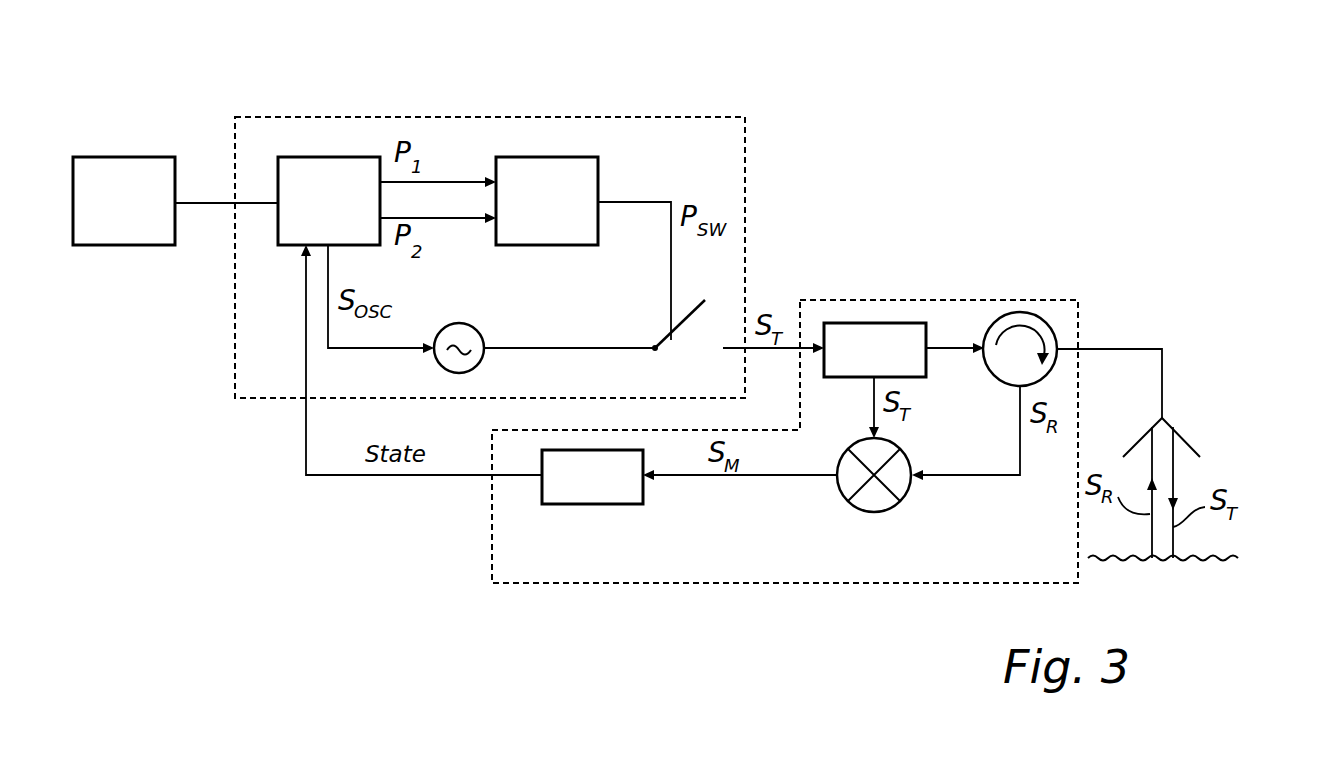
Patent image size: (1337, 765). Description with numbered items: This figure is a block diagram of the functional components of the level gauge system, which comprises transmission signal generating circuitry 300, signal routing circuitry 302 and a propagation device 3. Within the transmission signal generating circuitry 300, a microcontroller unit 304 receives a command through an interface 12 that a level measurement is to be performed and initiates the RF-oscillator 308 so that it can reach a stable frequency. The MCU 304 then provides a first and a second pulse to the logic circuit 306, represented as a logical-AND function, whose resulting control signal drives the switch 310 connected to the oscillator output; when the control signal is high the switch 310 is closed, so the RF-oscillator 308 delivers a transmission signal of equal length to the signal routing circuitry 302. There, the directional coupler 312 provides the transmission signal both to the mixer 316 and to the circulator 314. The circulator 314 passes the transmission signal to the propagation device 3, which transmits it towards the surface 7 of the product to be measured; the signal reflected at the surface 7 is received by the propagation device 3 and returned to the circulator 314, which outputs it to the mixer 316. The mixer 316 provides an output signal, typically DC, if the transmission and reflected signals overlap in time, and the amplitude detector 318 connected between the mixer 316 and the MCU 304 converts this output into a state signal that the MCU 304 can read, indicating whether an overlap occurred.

The interface 12 is at (122, 157).
The transmission signal generating circuitry 300 is at (468, 117).
The microcontroller unit 304 is at (334, 157).
The logic circuit 306 is at (598, 173).
The RF-oscillator 308 is at (460, 325).
The switch 310 is at (652, 324).
The signal routing circuitry 302 is at (958, 298).
The directional coupler 312 is at (882, 335).
The circulator 314 is at (1040, 318).
The mixer 316 is at (878, 512).
The amplitude detector 318 is at (582, 504).
The propagation device 3 is at (1178, 432).
The surface 7 is at (1235, 562).